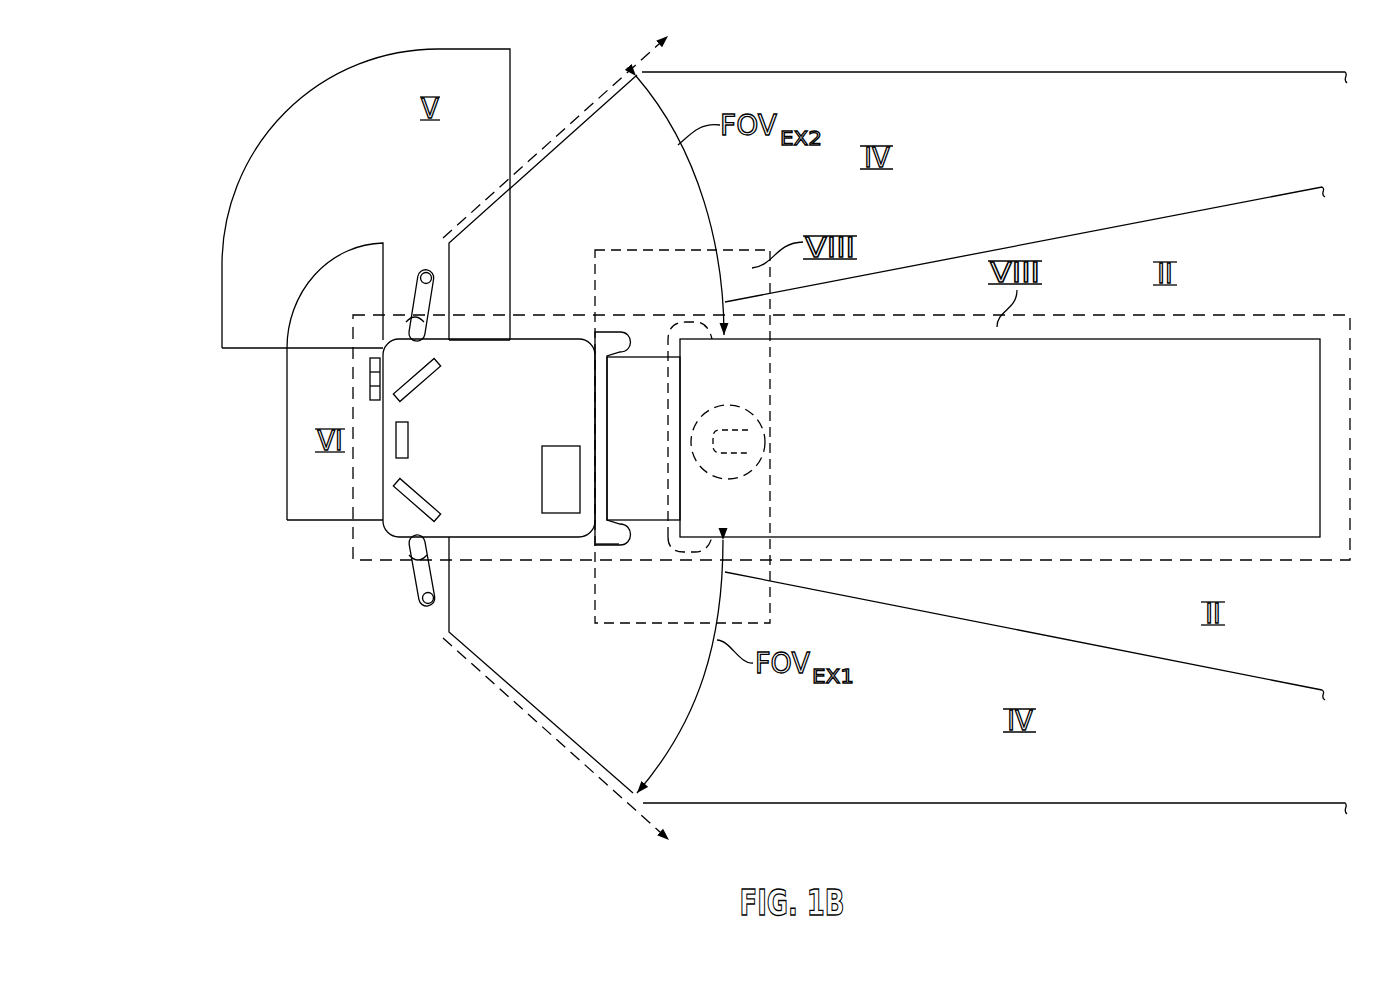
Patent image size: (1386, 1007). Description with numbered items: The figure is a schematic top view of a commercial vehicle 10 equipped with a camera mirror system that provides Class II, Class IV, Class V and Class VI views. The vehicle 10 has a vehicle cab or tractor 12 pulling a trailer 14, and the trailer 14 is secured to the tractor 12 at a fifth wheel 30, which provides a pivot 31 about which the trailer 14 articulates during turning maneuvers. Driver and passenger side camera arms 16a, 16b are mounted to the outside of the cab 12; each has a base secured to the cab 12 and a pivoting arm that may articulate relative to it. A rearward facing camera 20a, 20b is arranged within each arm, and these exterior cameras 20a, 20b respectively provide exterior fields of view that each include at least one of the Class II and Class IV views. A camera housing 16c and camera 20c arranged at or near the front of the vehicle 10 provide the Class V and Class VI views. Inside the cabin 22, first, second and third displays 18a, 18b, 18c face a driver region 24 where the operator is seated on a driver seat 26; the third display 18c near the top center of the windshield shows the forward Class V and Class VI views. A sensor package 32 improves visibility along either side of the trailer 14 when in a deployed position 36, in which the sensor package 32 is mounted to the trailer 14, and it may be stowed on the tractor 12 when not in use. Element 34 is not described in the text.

The commercial vehicle 10 is at (370, 335).
The vehicle cab 12 is at (387, 533).
The trailer 14 is at (1240, 333).
The driver side camera arm 16a is at (418, 570).
The passenger side camera arm 16b is at (413, 293).
The camera housing 16c is at (372, 387).
The first display 18a is at (427, 497).
The second display 18b is at (427, 382).
The third display 18c is at (393, 440).
The rearward facing camera 20a is at (432, 592).
The rearward facing camera 20b is at (433, 285).
The camera 20c is at (370, 372).
The cabin 22 is at (532, 357).
The driver region 24 is at (537, 467).
The driver seat 26 is at (563, 460).
The fifth wheel 30 is at (752, 403).
The pivot 31 is at (727, 447).
The sensor package 32 is at (600, 397).
The bracket lip 34 is at (607, 548).
The deployed position 36 is at (690, 558).